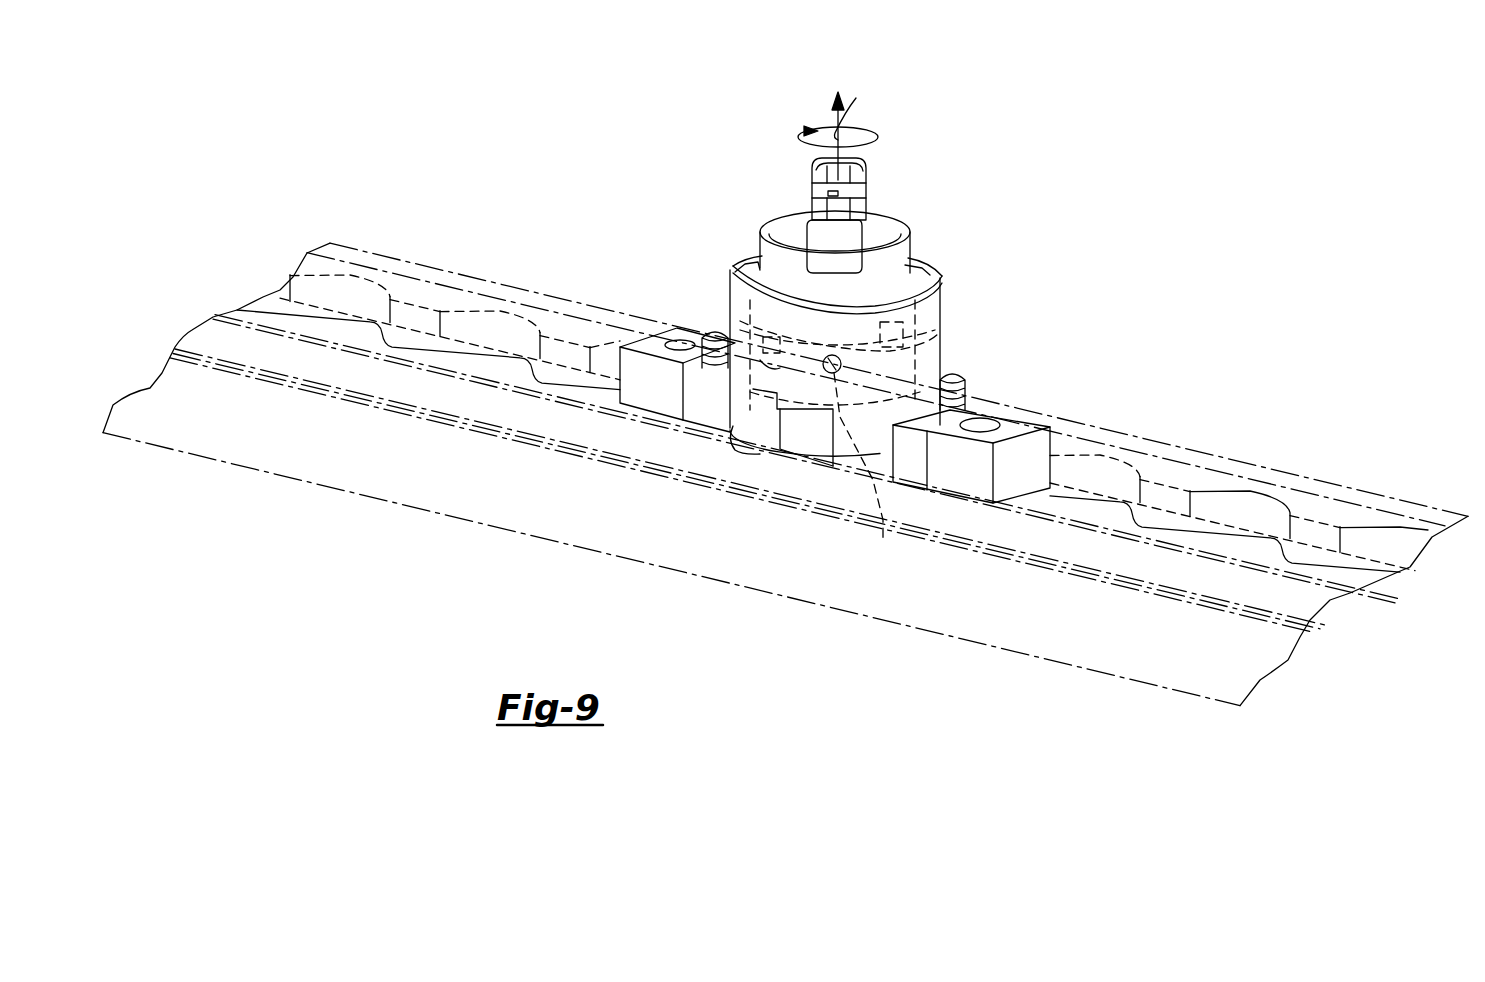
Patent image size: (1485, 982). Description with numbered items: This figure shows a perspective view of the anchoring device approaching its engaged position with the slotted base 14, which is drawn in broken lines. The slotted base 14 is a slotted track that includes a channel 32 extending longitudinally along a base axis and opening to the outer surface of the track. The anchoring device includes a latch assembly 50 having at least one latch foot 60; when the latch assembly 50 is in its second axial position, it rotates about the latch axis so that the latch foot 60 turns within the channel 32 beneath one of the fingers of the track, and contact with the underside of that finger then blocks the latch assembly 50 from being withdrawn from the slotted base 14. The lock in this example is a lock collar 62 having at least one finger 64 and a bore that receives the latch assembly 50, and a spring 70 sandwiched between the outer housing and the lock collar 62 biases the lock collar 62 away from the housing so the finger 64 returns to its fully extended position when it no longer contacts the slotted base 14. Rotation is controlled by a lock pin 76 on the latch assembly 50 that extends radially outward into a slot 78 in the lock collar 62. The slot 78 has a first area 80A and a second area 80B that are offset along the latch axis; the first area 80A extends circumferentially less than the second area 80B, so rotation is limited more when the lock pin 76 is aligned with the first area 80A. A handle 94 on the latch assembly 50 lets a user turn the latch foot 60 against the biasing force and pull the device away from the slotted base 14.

The slotted base 14 is at (1175, 468).
The channel 32 is at (1094, 476).
The latch assembly 50 is at (788, 215).
The latch foot 60 is at (817, 467).
The lock collar 62 is at (733, 395).
The finger 64 is at (727, 440).
The spring 70 is at (920, 283).
The lock pin 76 is at (859, 459).
The slot 78 is at (728, 292).
The first area 80A is at (913, 343).
The second area 80B is at (816, 376).
The handle 94 is at (827, 210).